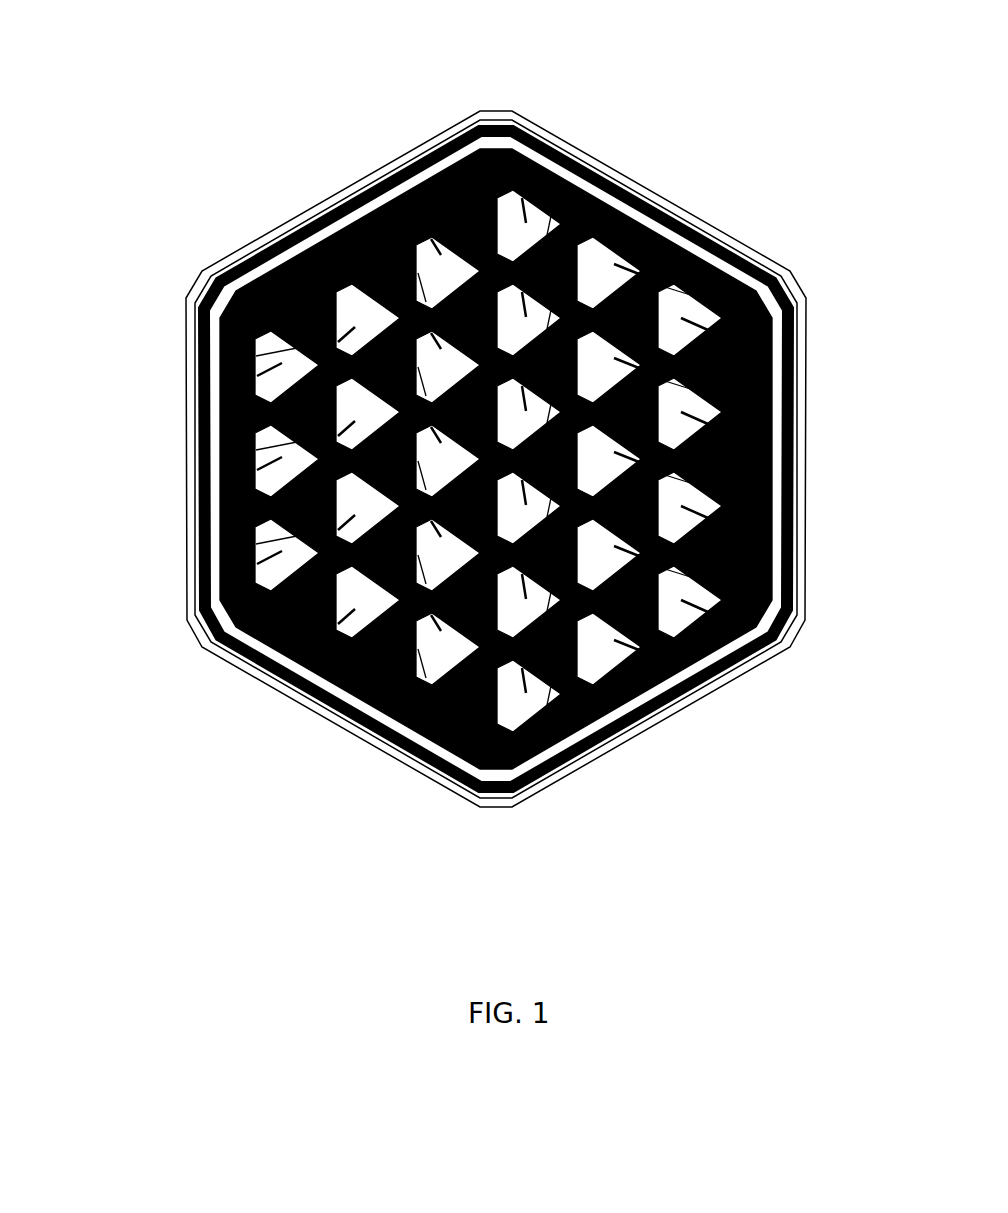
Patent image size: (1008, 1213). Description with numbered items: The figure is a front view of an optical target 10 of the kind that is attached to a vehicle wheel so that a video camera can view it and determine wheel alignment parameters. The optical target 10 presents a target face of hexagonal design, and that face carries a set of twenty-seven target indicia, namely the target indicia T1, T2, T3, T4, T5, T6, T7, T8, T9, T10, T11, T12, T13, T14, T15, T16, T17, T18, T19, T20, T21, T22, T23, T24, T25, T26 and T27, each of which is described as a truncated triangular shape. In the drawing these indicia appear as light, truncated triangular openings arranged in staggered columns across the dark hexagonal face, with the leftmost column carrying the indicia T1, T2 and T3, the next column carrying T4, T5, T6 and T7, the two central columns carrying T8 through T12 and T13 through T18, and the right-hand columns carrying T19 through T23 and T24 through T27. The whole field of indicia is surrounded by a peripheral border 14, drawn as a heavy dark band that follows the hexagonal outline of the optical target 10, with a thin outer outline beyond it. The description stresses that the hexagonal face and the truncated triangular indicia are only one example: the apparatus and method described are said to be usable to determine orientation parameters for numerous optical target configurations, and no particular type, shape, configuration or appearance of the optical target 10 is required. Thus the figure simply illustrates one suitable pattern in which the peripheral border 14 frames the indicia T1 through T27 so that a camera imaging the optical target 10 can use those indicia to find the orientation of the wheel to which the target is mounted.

The optical target 10 is at (705, 220).
The peripheral border 14 is at (743, 247).
The target indicium T1 is at (210, 573).
The target indicium T2 is at (210, 475).
The target indicium T3 is at (210, 380).
The target indicium T4 is at (213, 642).
The target indicium T5 is at (210, 538).
The target indicium T6 is at (210, 447).
The target indicium T7 is at (207, 350).
The target indicium T8 is at (417, 733).
The target indicium T9 is at (377, 705).
The target indicium T10 is at (327, 223).
The target indicium T11 is at (370, 190).
The target indicium T12 is at (407, 155).
The target indicium T13 is at (532, 763).
The target indicium T14 is at (573, 740).
The target indicium T15 is at (618, 707).
The target indicium T16 is at (625, 182).
The target indicium T17 is at (565, 160).
The target indicium T18 is at (520, 153).
The target indicium T19 is at (697, 688).
The target indicium T20 is at (792, 557).
The target indicium T21 is at (788, 465).
The target indicium T22 is at (765, 380).
The target indicium T23 is at (757, 285).
The target indicium T24 is at (758, 610).
The target indicium T25 is at (767, 508).
The target indicium T26 is at (767, 423).
The target indicium T27 is at (785, 330).